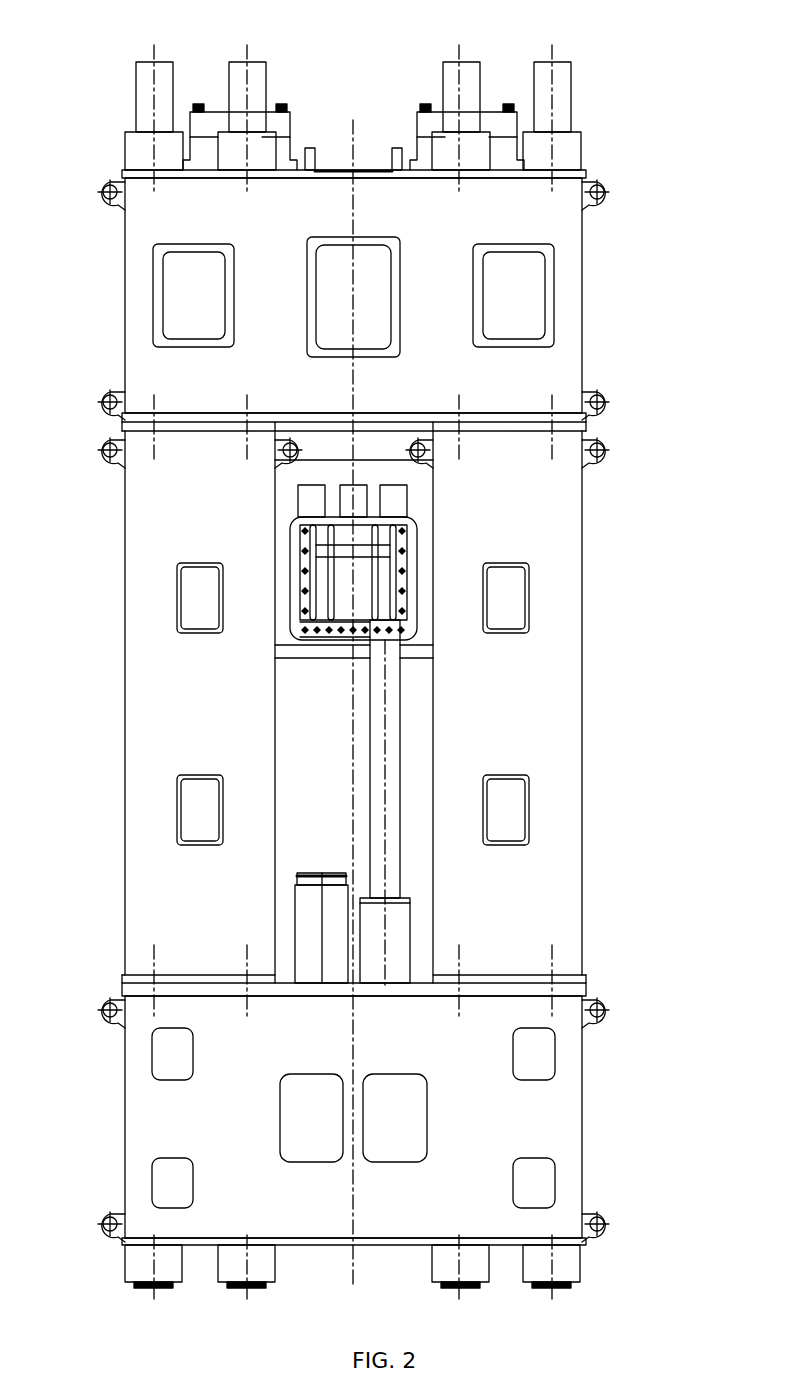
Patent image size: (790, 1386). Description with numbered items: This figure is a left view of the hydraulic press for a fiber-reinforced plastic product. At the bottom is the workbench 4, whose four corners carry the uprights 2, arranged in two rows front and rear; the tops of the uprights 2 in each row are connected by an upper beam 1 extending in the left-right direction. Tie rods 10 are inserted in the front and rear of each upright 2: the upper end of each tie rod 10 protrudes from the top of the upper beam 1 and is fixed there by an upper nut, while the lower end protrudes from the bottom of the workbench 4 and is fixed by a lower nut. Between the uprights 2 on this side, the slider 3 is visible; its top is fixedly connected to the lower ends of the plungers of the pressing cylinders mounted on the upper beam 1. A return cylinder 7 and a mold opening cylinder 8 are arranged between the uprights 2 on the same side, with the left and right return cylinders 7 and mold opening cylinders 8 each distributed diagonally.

The upper beam 1 is at (573, 270).
The upright 2 is at (552, 715).
The slider 3 is at (365, 583).
The workbench 4 is at (508, 990).
The return cylinder 7 is at (398, 923).
The mold opening cylinder 8 is at (312, 935).
The tie rod 10 is at (560, 70).